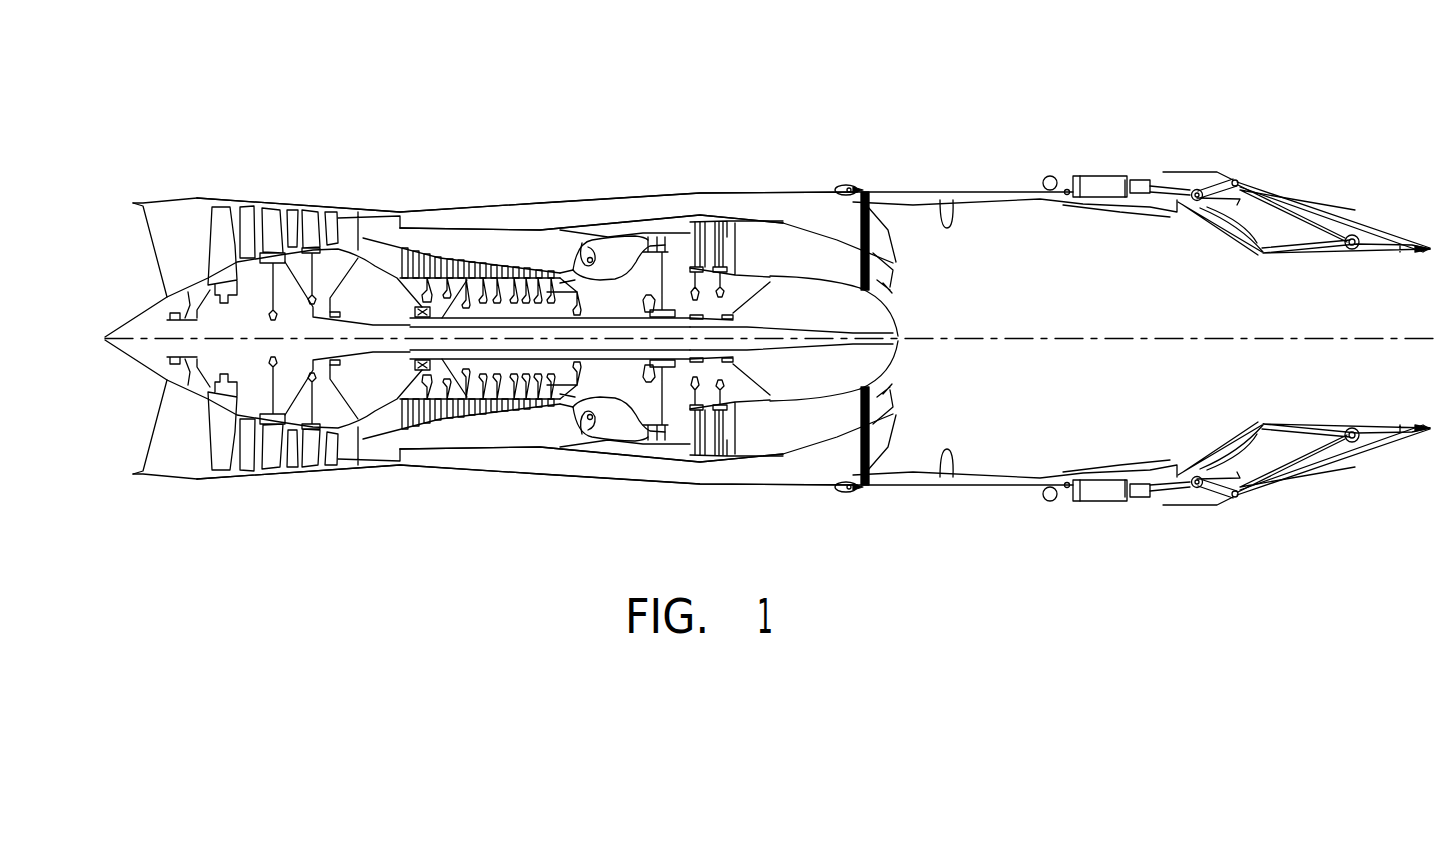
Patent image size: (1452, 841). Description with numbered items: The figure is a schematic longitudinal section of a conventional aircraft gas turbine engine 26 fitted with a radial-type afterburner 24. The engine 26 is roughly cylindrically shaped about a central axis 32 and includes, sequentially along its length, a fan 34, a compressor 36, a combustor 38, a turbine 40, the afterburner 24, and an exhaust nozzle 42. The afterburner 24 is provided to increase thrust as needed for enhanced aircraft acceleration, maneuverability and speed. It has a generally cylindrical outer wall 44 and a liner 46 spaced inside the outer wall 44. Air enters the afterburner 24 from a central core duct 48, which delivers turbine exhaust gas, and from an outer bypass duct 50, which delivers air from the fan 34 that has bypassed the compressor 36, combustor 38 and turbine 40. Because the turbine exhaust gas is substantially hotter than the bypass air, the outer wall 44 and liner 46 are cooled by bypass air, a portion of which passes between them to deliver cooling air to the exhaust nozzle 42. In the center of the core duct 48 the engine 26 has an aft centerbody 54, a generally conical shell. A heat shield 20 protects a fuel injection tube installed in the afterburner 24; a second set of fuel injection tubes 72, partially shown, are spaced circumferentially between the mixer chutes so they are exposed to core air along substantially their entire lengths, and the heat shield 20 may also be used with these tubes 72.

The heat shield 20 is at (860, 270).
The afterburner 24 is at (843, 182).
The aircraft gas turbine engine 26 is at (402, 103).
The central axis 32 is at (1120, 337).
The fan 34 is at (243, 205).
The compressor 36 is at (438, 252).
The combustor 38 is at (593, 235).
The turbine 40 is at (677, 207).
The exhaust nozzle 42 is at (1287, 193).
The outer wall 44 is at (972, 193).
The liner 46 is at (940, 185).
The core duct 48 is at (803, 253).
The bypass duct 50 is at (737, 203).
The aft centerbody 54 is at (897, 353).
The second set of fuel injection tubes 72 is at (880, 301).